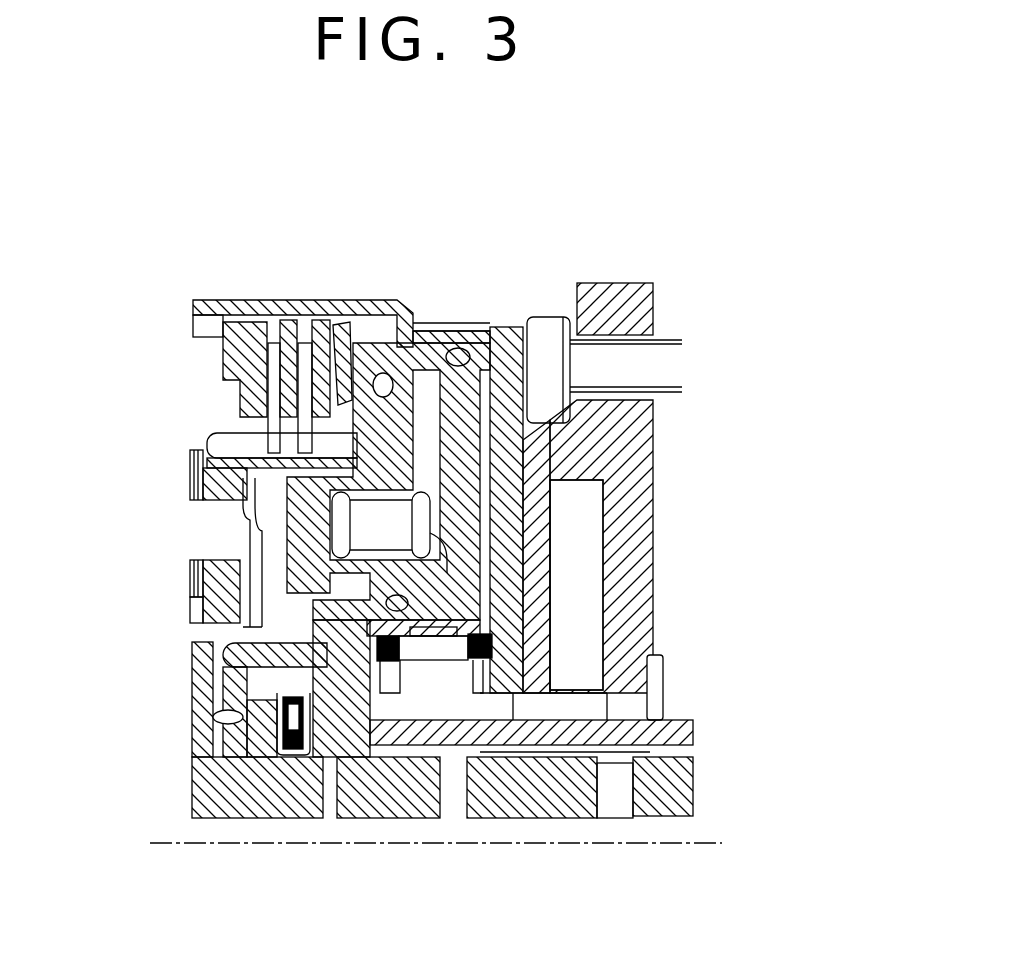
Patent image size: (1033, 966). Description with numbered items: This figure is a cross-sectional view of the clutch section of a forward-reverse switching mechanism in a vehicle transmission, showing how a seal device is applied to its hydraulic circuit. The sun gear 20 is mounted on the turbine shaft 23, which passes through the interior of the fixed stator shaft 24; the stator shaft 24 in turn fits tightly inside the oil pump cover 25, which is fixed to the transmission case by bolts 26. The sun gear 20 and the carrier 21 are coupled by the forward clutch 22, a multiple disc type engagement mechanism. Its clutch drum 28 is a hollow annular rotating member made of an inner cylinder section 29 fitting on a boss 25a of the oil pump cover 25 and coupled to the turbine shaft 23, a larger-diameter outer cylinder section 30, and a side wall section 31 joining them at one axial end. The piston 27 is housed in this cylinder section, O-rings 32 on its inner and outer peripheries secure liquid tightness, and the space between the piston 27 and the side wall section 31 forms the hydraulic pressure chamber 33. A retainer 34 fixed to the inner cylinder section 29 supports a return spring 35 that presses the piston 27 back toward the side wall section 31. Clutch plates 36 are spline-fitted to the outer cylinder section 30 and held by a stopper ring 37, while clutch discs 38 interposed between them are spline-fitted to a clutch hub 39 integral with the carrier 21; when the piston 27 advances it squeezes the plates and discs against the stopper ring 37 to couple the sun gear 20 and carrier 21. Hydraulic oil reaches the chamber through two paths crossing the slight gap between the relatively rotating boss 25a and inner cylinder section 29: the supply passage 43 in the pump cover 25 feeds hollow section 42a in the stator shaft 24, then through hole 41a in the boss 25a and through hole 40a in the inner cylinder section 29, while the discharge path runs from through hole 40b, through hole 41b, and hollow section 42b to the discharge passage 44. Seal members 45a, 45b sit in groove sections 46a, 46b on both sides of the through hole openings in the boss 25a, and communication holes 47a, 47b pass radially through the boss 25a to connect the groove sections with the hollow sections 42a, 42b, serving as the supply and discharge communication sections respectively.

The sun gear 20 is at (192, 657).
The carrier 21 is at (217, 538).
The forward clutch 22 is at (284, 325).
The turbine shaft 23 is at (515, 627).
The stator shaft 24 is at (680, 742).
The oil pump cover 25 is at (653, 410).
The boss 25a is at (300, 712).
The bolts 26 is at (653, 367).
The piston 27 is at (420, 330).
The clutch drum 28 is at (341, 285).
The inner cylinder section 29 is at (465, 625).
The outer cylinder section 30 is at (228, 300).
The side wall section 31 is at (495, 470).
The O-rings 32 is at (370, 592).
The hydraulic pressure chamber 33 is at (655, 443).
The retainer 34 is at (228, 455).
The return spring 35 is at (345, 523).
The clutch plates 36 is at (312, 300).
The stopper ring 37 is at (225, 332).
The clutch discs 38 is at (310, 398).
The clutch hub 39 is at (240, 433).
The through hole 40a is at (560, 548).
The through hole 40b is at (691, 532).
The through hole 41a is at (580, 590).
The through hole 41b is at (703, 659).
The hollow section 42a is at (583, 700).
The hollow section 42b is at (701, 572).
The supply passage 43 is at (578, 505).
The discharge passage 44 is at (673, 579).
The seal member 45a is at (360, 612).
The seal member 45b is at (517, 660).
The groove section 46a is at (300, 672).
The groove section 46b is at (455, 652).
The communication hole 47a is at (385, 645).
The communication hole 47b is at (403, 792).